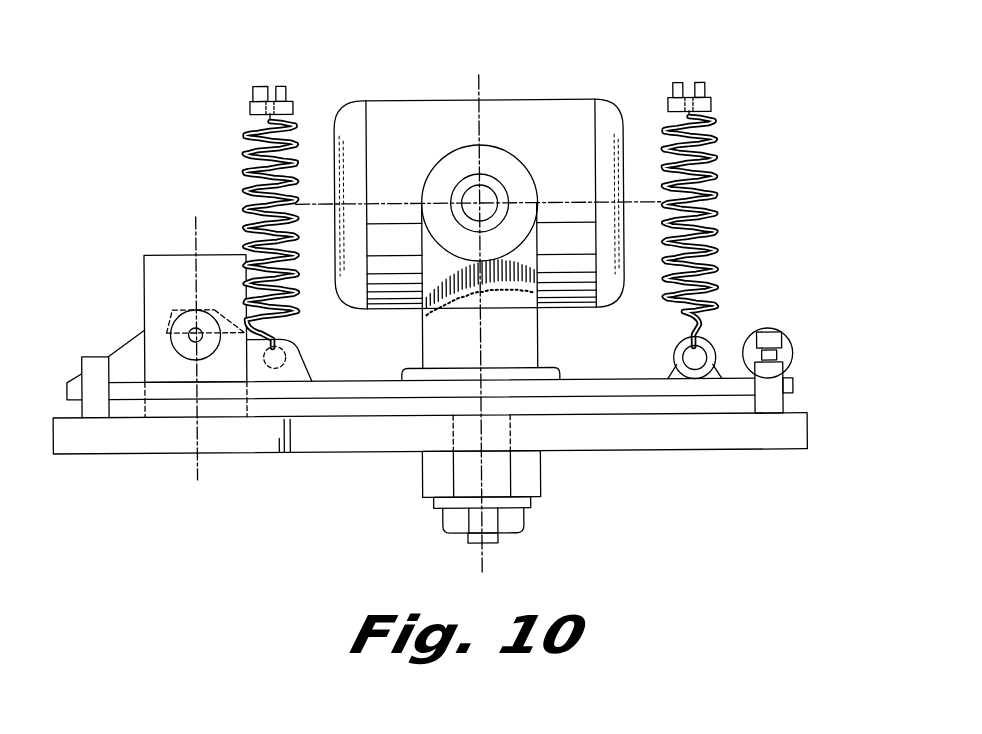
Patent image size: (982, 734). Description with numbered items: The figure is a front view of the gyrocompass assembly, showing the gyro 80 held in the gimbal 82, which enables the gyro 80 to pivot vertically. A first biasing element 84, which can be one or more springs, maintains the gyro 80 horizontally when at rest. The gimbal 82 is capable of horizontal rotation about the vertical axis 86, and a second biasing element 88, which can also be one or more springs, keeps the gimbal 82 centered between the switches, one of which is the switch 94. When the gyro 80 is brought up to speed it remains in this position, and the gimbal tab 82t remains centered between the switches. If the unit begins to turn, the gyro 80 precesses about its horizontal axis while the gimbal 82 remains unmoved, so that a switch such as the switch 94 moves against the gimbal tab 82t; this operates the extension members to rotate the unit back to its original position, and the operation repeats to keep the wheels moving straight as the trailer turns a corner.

The gyrocompass 80 is at (528, 99).
The gimbal 82 is at (632, 378).
The gimbal tab 82t is at (130, 340).
The first biasing element 84 is at (255, 127).
The vertical axis 86 is at (478, 555).
The second biasing element 88 is at (792, 355).
The switch 94 is at (175, 266).